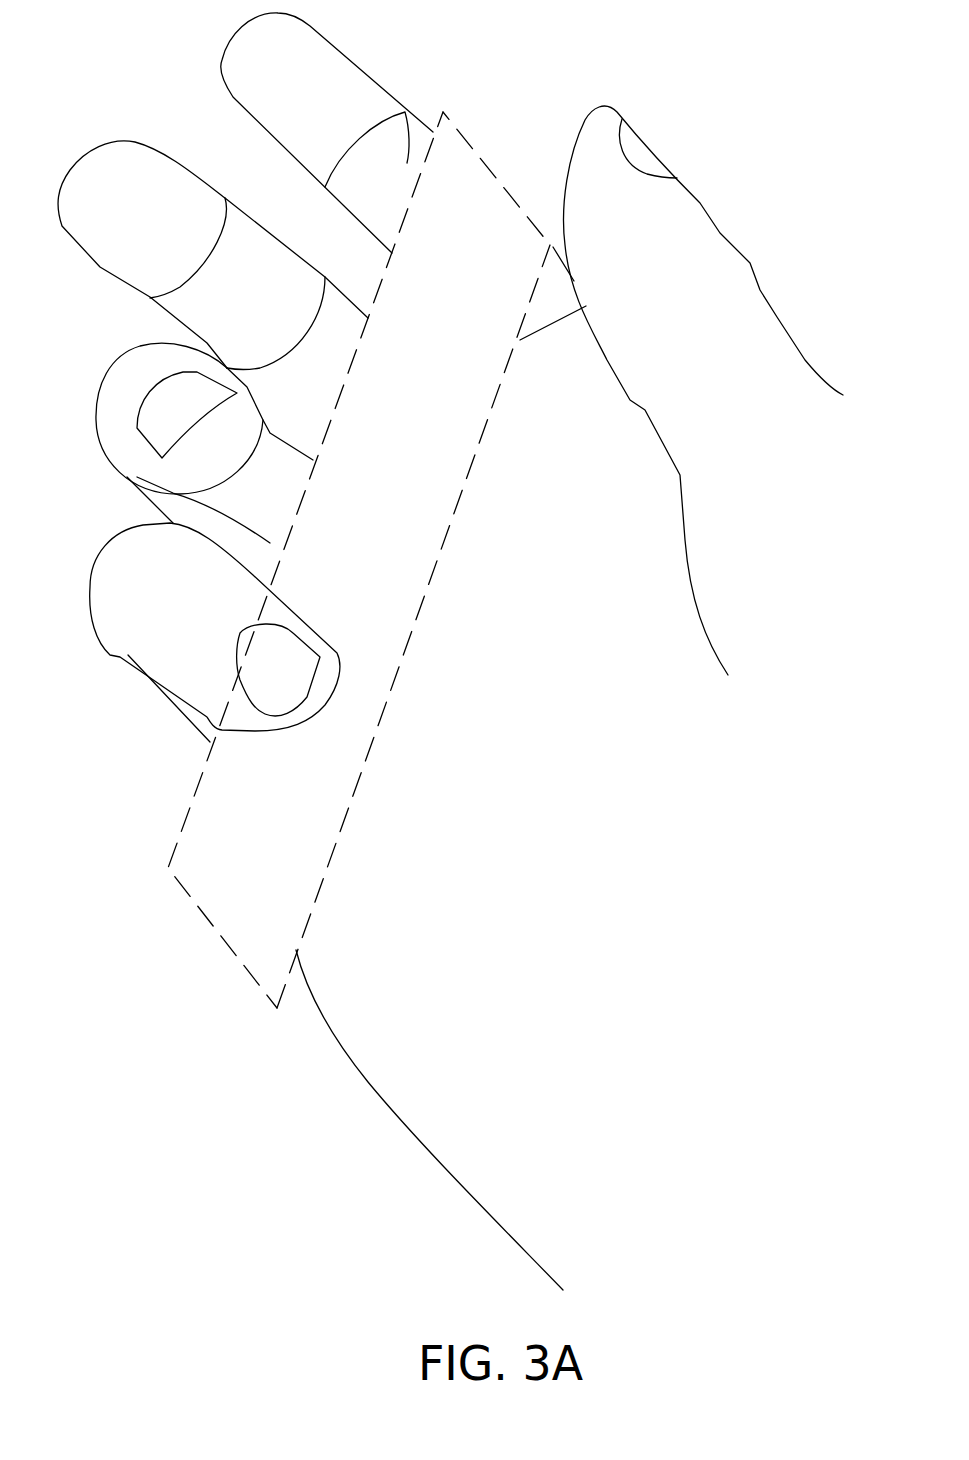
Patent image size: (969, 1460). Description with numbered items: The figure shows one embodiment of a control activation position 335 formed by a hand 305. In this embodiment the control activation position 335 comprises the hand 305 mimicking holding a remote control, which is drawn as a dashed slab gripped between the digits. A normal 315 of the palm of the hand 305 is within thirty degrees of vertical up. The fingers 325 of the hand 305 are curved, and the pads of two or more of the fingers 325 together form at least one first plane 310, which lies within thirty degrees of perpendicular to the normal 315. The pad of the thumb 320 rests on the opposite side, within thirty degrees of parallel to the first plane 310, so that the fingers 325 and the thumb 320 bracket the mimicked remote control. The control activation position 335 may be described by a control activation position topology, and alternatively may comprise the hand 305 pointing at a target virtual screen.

The hand 305 is at (562, 679).
The first plane 310 is at (394, 539).
The normal 315 is at (530, 571).
The thumb 320 is at (571, 165).
The fingers 325 is at (404, 116).
The control activation position 335 is at (124, 56).